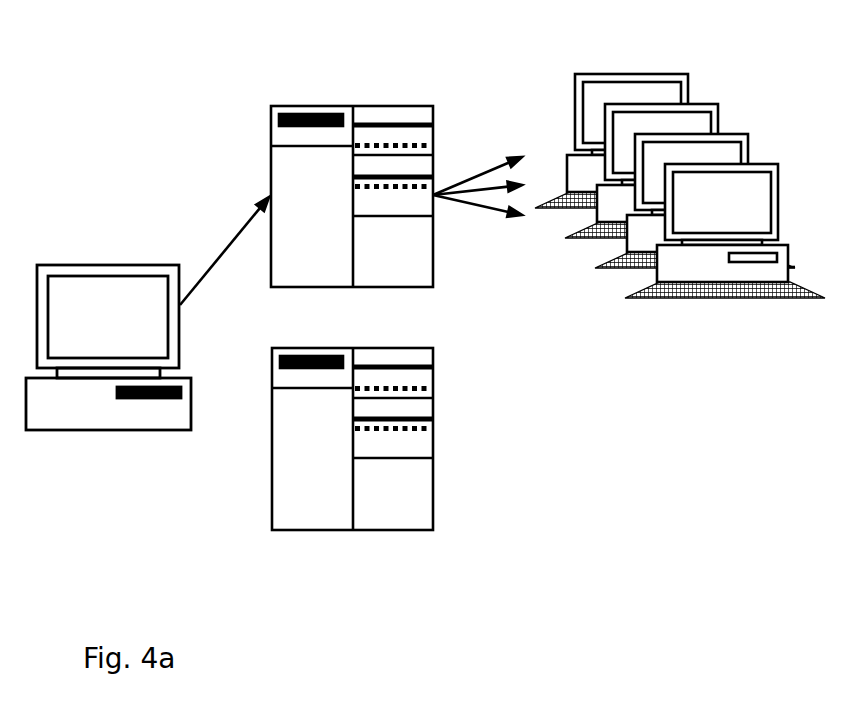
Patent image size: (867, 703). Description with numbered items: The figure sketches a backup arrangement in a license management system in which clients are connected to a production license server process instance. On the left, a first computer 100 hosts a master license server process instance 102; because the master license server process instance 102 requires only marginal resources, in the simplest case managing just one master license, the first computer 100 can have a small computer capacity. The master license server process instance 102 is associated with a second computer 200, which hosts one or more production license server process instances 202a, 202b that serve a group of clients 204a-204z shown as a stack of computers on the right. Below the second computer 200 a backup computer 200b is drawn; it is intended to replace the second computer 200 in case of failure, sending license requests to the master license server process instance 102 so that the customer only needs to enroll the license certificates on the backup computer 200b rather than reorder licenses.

The first computer 100 is at (108, 386).
The master license server process instance 102 is at (108, 430).
The second computer 200 is at (374, 157).
The production license server process instance 202a is at (374, 157).
The production license server process instance 202b is at (310, 106).
The backup computer 200b is at (348, 530).
The client 204a is at (680, 279).
The client 204z is at (817, 348).